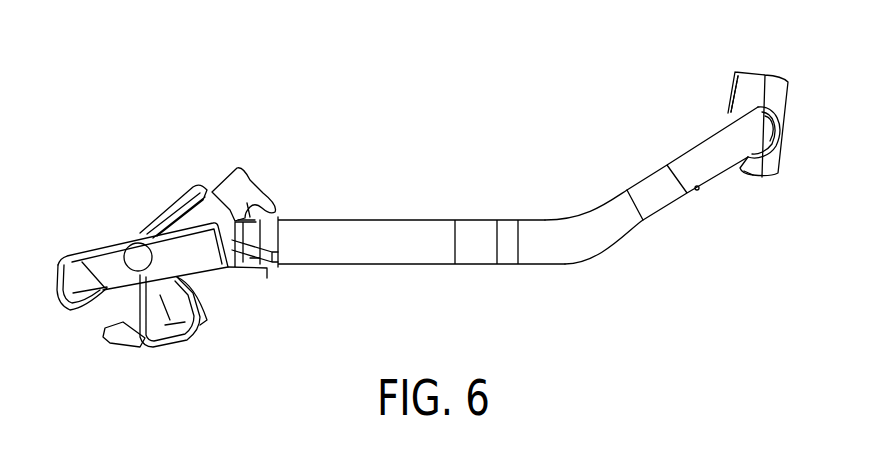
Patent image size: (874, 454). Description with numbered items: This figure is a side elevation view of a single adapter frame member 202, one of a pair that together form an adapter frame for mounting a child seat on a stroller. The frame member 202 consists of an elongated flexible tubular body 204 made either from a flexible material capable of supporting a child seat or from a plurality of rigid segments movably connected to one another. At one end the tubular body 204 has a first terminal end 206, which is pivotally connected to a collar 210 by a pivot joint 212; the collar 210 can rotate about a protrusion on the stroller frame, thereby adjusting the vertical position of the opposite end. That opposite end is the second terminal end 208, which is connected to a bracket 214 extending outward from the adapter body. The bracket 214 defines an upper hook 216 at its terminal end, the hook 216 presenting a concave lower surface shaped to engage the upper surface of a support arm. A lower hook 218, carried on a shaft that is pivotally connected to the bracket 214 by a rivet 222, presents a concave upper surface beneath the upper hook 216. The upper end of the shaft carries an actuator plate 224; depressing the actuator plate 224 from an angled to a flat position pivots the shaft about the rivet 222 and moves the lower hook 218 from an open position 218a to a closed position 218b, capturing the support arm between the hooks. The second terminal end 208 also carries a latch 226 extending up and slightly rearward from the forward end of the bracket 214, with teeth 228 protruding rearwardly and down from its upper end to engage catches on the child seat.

The adapter frame member 202 is at (535, 212).
The elongated flexible tubular body 204 is at (447, 218).
The first terminal end 206 is at (740, 115).
The second terminal end 208 is at (288, 218).
The collar 210 is at (788, 80).
The pivot joint 212 is at (782, 122).
The bracket 214 is at (110, 260).
The upper hook 216 is at (50, 270).
The lower hook 218 is at (175, 358).
The open position 218a is at (203, 323).
The closed position 218b is at (113, 345).
The rivet 222 is at (125, 247).
The actuator plate 224 is at (167, 200).
The latch 226 is at (233, 167).
The teeth 228 is at (267, 268).